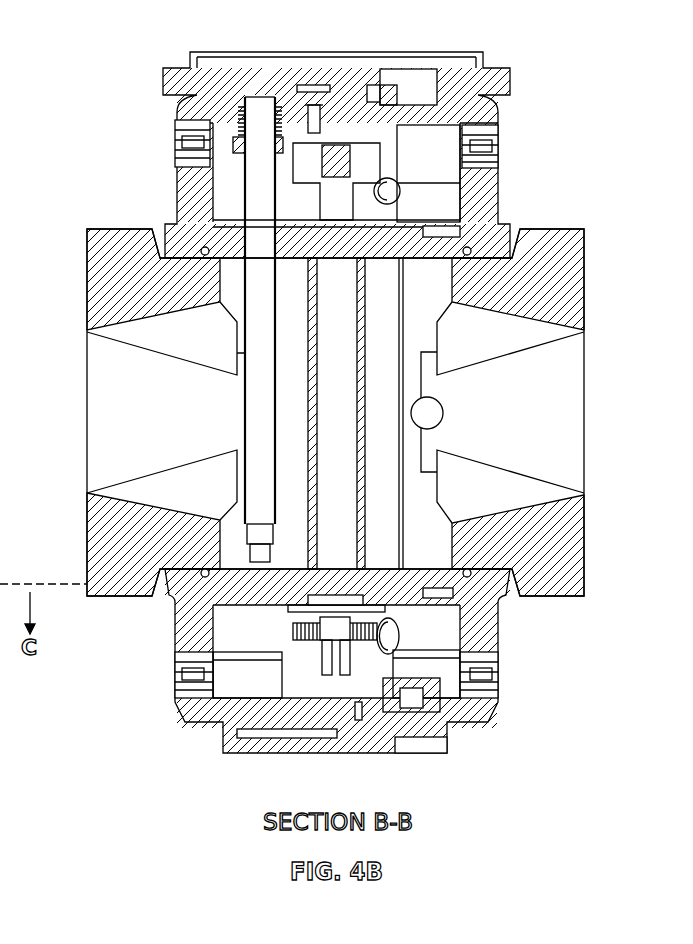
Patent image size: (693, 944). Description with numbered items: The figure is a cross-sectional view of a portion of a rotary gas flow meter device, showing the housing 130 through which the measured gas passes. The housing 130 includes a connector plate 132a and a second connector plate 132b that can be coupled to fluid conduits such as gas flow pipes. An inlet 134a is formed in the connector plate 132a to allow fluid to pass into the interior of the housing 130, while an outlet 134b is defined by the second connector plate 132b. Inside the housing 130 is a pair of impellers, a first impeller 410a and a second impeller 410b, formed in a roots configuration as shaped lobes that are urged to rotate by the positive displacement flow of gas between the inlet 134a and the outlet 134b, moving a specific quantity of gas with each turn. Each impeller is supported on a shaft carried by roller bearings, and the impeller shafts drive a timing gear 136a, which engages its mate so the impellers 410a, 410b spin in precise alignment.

The housing 130 is at (110, 62).
The connector plate 132a is at (87, 258).
The second connector plate 132b is at (584, 577).
The inlet 134a is at (87, 447).
The outlet 134b is at (584, 378).
The timing gear 136a is at (292, 634).
The first impeller 410a is at (287, 375).
The second impeller 410b is at (387, 360).